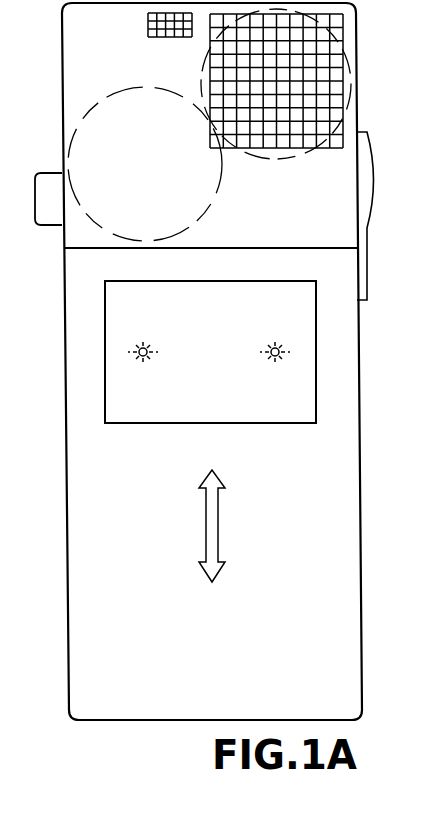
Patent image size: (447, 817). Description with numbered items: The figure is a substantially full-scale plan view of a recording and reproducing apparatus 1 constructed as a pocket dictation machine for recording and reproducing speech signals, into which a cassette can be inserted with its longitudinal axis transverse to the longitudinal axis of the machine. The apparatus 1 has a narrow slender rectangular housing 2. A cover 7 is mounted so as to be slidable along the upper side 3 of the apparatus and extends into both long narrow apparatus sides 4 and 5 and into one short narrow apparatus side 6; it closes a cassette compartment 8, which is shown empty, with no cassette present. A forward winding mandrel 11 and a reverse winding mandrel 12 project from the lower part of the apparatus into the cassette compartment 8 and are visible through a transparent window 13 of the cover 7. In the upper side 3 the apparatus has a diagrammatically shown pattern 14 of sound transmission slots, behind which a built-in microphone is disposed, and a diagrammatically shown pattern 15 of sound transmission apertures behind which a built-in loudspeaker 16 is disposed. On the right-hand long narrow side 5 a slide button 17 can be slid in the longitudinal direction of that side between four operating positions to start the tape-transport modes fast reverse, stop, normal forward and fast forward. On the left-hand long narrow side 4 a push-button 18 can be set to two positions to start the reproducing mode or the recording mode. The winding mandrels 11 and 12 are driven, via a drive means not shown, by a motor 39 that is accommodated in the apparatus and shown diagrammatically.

The recording and reproducing apparatus 1 is at (177, 744).
The housing 2 is at (360, 62).
The upper side 3 is at (78, 52).
The long narrow apparatus side 4 is at (65, 453).
The long narrow apparatus side 5 is at (360, 535).
The short narrow apparatus side 6 is at (128, 720).
The cover 7 is at (342, 452).
The cassette compartment 8 is at (249, 297).
The forward winding mandrel 11 is at (275, 362).
The reverse winding mandrel 12 is at (143, 362).
The transparent window 13 is at (235, 423).
The pattern of sound transmission slots 14 is at (148, 21).
The pattern of sound transmission apertures 15 is at (337, 150).
The loudspeaker 16 is at (300, 157).
The slide button 17 is at (370, 158).
The push-button 18 is at (55, 225).
The motor 39 is at (140, 88).